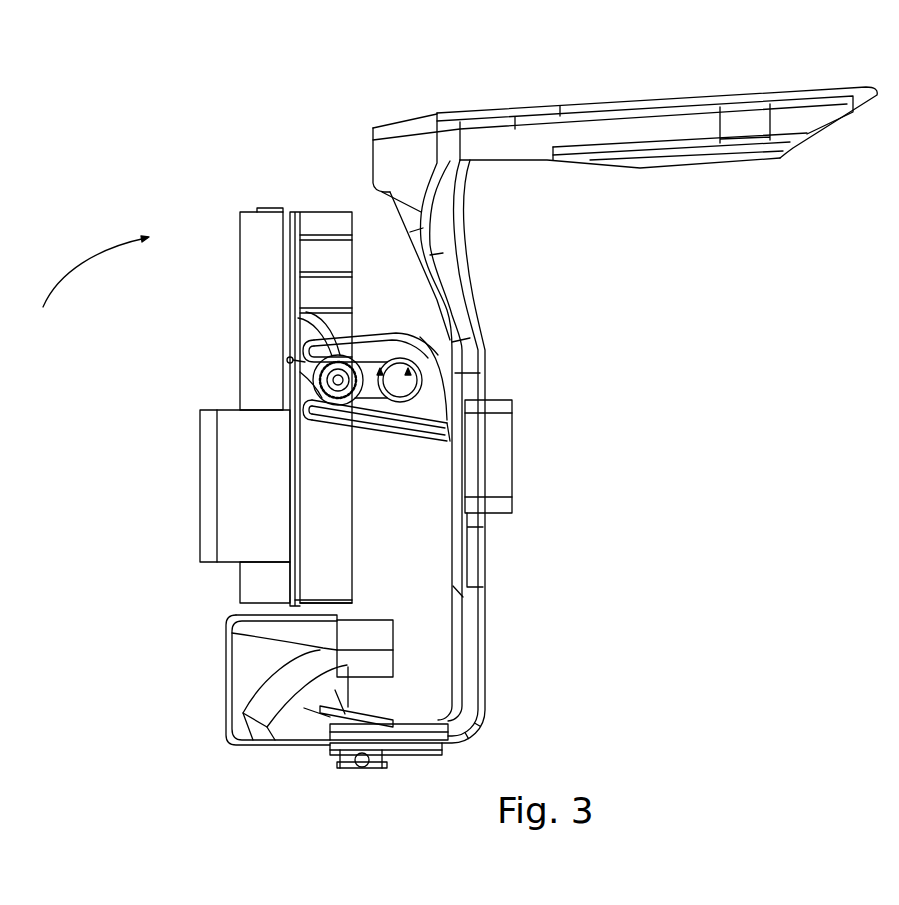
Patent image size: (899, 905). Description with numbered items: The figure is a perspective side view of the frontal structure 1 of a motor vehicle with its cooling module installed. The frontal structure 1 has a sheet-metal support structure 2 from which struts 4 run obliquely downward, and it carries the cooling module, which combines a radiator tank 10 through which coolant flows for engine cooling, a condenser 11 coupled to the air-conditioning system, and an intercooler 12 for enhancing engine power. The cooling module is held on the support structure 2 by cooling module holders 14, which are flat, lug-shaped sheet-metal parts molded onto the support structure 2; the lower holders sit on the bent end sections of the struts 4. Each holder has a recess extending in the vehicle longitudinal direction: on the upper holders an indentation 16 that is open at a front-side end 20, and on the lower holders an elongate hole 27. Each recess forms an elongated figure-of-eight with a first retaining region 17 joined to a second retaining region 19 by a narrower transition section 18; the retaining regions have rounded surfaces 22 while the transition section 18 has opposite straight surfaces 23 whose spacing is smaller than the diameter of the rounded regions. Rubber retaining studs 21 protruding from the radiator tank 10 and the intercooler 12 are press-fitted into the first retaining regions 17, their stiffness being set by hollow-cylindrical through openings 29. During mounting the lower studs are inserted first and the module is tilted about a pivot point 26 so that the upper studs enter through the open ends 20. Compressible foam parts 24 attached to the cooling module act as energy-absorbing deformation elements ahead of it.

The frontal structure 1 is at (543, 94).
The support structure 2 is at (692, 166).
The strut 4 is at (472, 287).
The radiator tank 10 is at (316, 210).
The condenser 11 is at (244, 208).
The intercooler 12 is at (227, 722).
The cooling module holder 14 is at (298, 318).
The indentation 16 is at (378, 410).
The first retaining region 17 is at (320, 366).
The transition section 18 is at (386, 403).
The second retaining region 19 is at (436, 402).
The front-side end 20 is at (290, 360).
The retaining stud 21 is at (365, 553).
The rounded surface 22 is at (350, 427).
The straight surface 23 is at (340, 405).
The compressible foam part 24 is at (223, 540).
The pivot point 26 is at (386, 768).
The elongate hole 27 is at (332, 745).
The through opening 29 is at (362, 345).